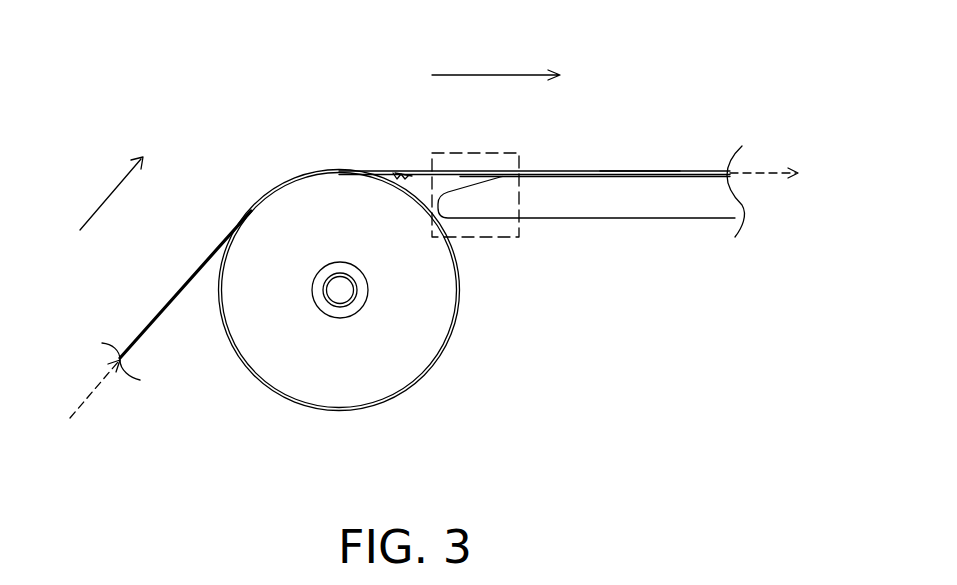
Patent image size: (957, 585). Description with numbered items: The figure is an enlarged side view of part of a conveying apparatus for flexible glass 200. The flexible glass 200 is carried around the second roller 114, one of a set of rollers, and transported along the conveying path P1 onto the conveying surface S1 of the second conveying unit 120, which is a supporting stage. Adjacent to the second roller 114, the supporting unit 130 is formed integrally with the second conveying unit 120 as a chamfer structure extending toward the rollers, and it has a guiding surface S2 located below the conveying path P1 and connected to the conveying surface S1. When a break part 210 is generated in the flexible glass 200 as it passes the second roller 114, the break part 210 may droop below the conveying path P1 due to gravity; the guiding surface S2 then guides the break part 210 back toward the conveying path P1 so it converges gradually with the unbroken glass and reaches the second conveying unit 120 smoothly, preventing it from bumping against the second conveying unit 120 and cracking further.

The second roller 114 is at (387, 365).
The second conveying unit 120 is at (638, 213).
The supporting unit 130 is at (455, 152).
The flexible glass 200 is at (173, 297).
The break part 210 is at (412, 186).
The conveying surface S1 is at (646, 160).
The guiding surface S2 is at (484, 169).
The conveying path P1 is at (757, 168).